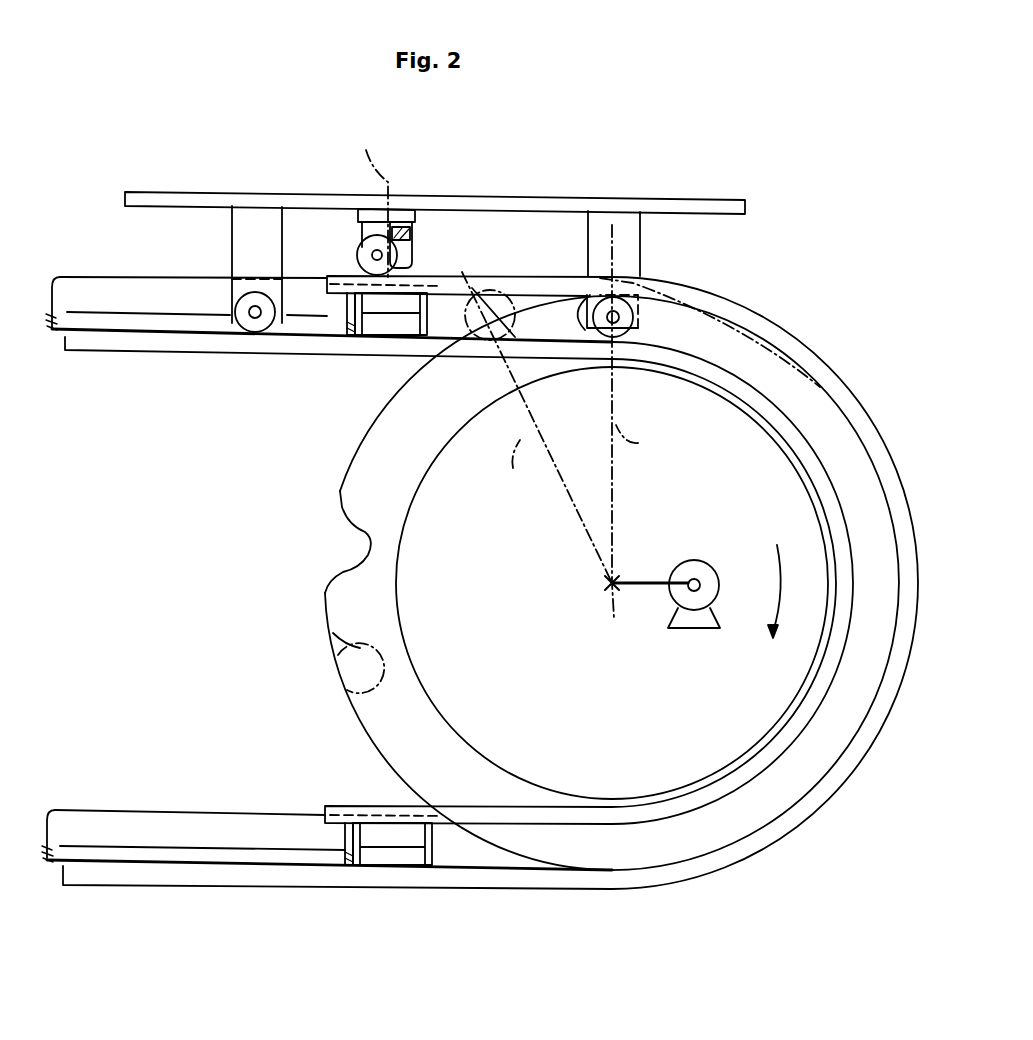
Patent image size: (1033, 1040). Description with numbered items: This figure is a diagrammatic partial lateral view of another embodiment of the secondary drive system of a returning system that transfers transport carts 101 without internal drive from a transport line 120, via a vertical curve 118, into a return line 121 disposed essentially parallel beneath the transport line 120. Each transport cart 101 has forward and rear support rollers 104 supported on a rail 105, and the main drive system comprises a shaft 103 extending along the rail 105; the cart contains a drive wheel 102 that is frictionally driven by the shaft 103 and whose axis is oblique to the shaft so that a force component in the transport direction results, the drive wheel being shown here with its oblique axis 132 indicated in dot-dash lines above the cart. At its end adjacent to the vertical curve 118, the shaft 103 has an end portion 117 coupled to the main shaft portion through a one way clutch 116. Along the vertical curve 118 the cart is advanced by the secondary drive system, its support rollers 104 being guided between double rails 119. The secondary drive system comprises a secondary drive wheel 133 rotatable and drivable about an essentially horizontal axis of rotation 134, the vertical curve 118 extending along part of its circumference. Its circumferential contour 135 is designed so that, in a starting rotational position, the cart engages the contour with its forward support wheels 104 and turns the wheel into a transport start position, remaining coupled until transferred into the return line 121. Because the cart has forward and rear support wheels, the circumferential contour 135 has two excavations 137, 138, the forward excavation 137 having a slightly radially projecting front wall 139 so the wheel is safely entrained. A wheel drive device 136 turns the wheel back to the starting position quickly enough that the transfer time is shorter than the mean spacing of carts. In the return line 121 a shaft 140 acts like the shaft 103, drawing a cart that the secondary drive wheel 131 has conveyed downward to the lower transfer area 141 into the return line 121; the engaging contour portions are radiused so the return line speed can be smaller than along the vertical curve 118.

The transport cart 101 is at (185, 197).
The drive wheel 102 is at (410, 236).
The shaft 103 is at (181, 292).
The support rollers 104 is at (256, 333).
The rail 105 is at (148, 350).
The one way clutch 116 is at (347, 335).
The end portion 117 is at (396, 336).
The vertical curve 118 is at (822, 350).
The double rails 119 is at (445, 283).
The transport line 120 is at (80, 271).
The return line 121 is at (110, 800).
The secondary drive wheel 131 is at (370, 238).
The roller axis 132 is at (359, 204).
The secondary drive wheel 133 is at (792, 698).
The axis of rotation 134 is at (612, 590).
The circumferential contour 135 is at (343, 482).
The wheel drive device 136 is at (703, 575).
The forward excavation 137 is at (583, 290).
The excavation 138 is at (354, 530).
The front wall 139 is at (640, 282).
The shaft 140 is at (215, 818).
The lower transfer area 141 is at (536, 895).